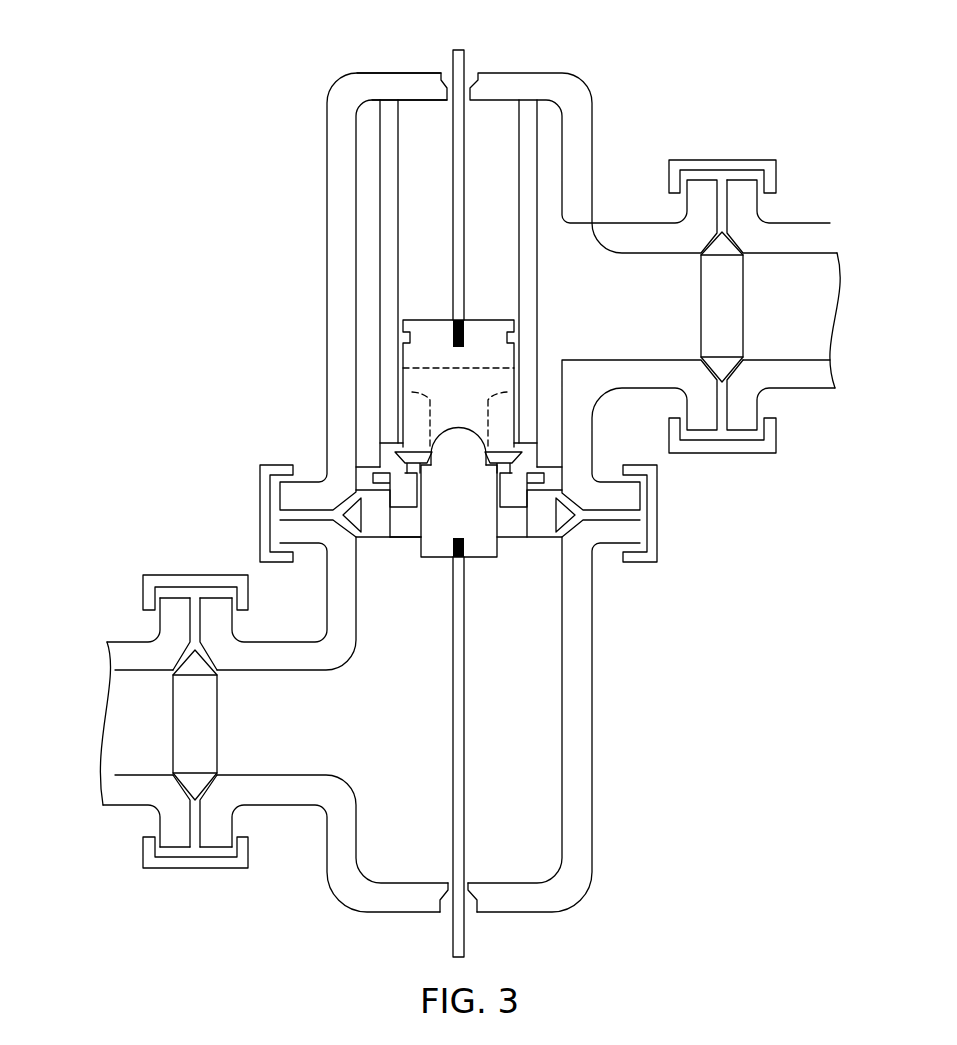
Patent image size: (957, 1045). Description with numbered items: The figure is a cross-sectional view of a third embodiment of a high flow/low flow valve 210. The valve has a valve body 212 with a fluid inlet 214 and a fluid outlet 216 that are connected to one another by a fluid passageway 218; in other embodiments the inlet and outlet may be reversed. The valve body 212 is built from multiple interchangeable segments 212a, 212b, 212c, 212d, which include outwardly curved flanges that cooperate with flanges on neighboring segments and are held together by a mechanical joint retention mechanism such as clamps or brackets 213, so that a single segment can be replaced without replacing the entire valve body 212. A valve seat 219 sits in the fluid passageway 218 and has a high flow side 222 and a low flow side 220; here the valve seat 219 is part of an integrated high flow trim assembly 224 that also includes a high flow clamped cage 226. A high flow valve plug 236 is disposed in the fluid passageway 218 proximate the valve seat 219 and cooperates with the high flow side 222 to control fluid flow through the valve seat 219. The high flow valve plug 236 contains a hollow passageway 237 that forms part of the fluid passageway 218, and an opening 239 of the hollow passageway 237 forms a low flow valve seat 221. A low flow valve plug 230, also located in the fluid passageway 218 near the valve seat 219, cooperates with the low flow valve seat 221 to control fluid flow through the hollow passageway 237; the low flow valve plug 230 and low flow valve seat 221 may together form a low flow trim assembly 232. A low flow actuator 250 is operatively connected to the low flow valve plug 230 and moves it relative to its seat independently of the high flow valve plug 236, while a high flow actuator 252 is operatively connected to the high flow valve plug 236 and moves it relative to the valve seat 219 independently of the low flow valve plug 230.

The high flow/low flow valve 210 is at (136, 106).
The valve body 212 is at (608, 67).
The interchangeable segment 212a is at (805, 240).
The interchangeable segment 212b is at (372, 90).
The interchangeable segment 212c is at (566, 862).
The interchangeable segment 212d is at (120, 796).
The clamps or brackets 213 is at (713, 165).
The fluid inlet 214 is at (812, 305).
The fluid outlet 216 is at (120, 739).
The fluid passageway 218 is at (326, 745).
The valve seat 219 is at (383, 472).
The low flow side 220 is at (516, 575).
The low flow valve seat 221 is at (403, 447).
The high flow side 222 is at (509, 417).
The high flow trim assembly 224 is at (366, 237).
The high flow clamped cage 226 is at (385, 165).
The low flow valve plug 230 is at (476, 520).
The low flow trim assembly 232 is at (409, 562).
The high flow valve plug 236 is at (428, 347).
The hollow passageway 237 is at (412, 390).
The opening 239 is at (483, 443).
The low flow actuator 250 is at (460, 860).
The high flow actuator 252 is at (466, 58).